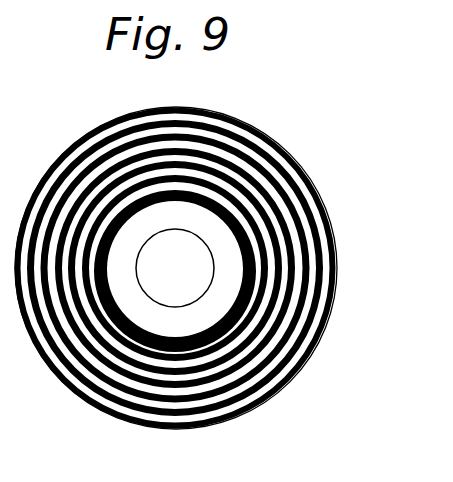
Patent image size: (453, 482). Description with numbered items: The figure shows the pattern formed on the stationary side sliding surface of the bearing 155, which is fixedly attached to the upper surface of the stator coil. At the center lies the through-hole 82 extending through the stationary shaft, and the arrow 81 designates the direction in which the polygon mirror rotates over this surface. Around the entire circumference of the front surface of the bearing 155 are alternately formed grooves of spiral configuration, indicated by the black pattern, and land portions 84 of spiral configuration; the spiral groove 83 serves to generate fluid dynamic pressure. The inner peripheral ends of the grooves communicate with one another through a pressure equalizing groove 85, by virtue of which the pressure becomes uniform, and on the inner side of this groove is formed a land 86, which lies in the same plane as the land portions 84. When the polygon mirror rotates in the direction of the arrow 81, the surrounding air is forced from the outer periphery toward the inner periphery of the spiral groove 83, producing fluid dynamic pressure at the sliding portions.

The stationary side bearing 155 is at (320, 204).
The arrow 81 is at (377, 212).
The through-hole 82 is at (192, 281).
The spiral groove 83 is at (333, 287).
The land portions 84 is at (315, 332).
The pressure equalizing groove 85 is at (215, 348).
The land 86 is at (170, 323).